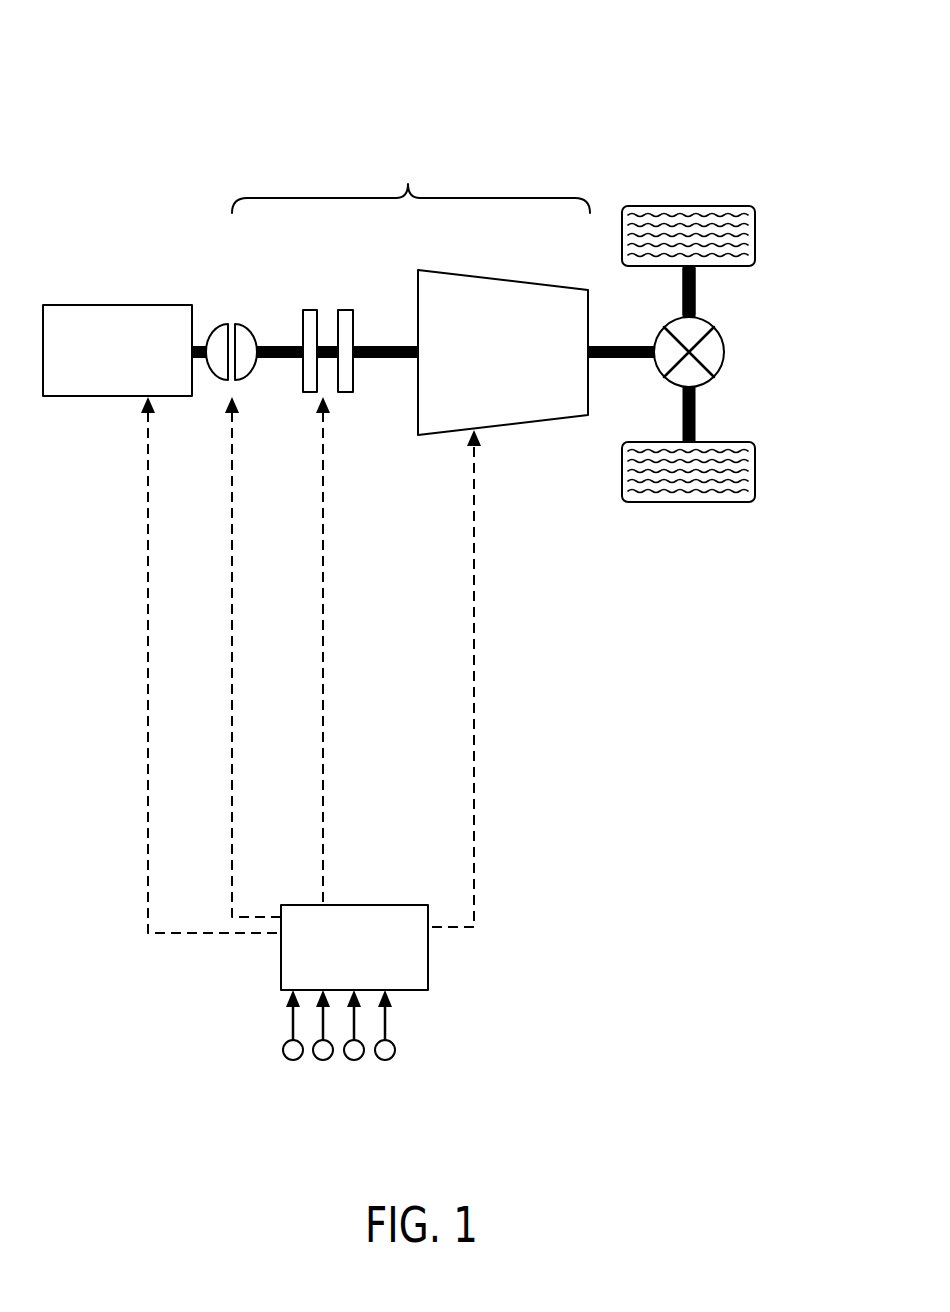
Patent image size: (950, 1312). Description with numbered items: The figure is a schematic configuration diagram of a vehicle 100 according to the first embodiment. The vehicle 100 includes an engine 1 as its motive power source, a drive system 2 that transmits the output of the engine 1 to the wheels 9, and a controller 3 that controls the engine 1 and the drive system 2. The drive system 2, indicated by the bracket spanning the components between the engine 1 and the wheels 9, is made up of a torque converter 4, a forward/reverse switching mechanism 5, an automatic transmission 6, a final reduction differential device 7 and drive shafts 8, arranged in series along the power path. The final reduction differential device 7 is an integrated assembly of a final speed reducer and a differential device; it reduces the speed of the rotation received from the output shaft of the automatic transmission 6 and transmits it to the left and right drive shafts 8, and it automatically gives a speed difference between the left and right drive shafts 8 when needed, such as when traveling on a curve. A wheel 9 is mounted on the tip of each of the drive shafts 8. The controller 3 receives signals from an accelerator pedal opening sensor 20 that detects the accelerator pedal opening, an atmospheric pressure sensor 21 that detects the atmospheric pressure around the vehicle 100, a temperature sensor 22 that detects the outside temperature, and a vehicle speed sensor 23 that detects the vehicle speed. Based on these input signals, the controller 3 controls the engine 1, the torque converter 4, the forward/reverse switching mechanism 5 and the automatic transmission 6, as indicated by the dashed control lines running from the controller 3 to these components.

The vehicle 100 is at (69, 108).
The engine 1 is at (152, 304).
The drive system 2 is at (411, 180).
The controller 3 is at (388, 903).
The torque converter 4 is at (232, 322).
The forward/reverse switching mechanism 5 is at (318, 305).
The automatic transmission 6 is at (455, 280).
The final reduction differential device 7 is at (663, 326).
The drive shafts 8 is at (683, 284).
The wheels 9 is at (713, 205).
The accelerator pedal opening sensor 20 is at (292, 1061).
The atmospheric pressure sensor 21 is at (323, 1061).
The temperature sensor 22 is at (354, 1061).
The vehicle speed sensor 23 is at (385, 1061).